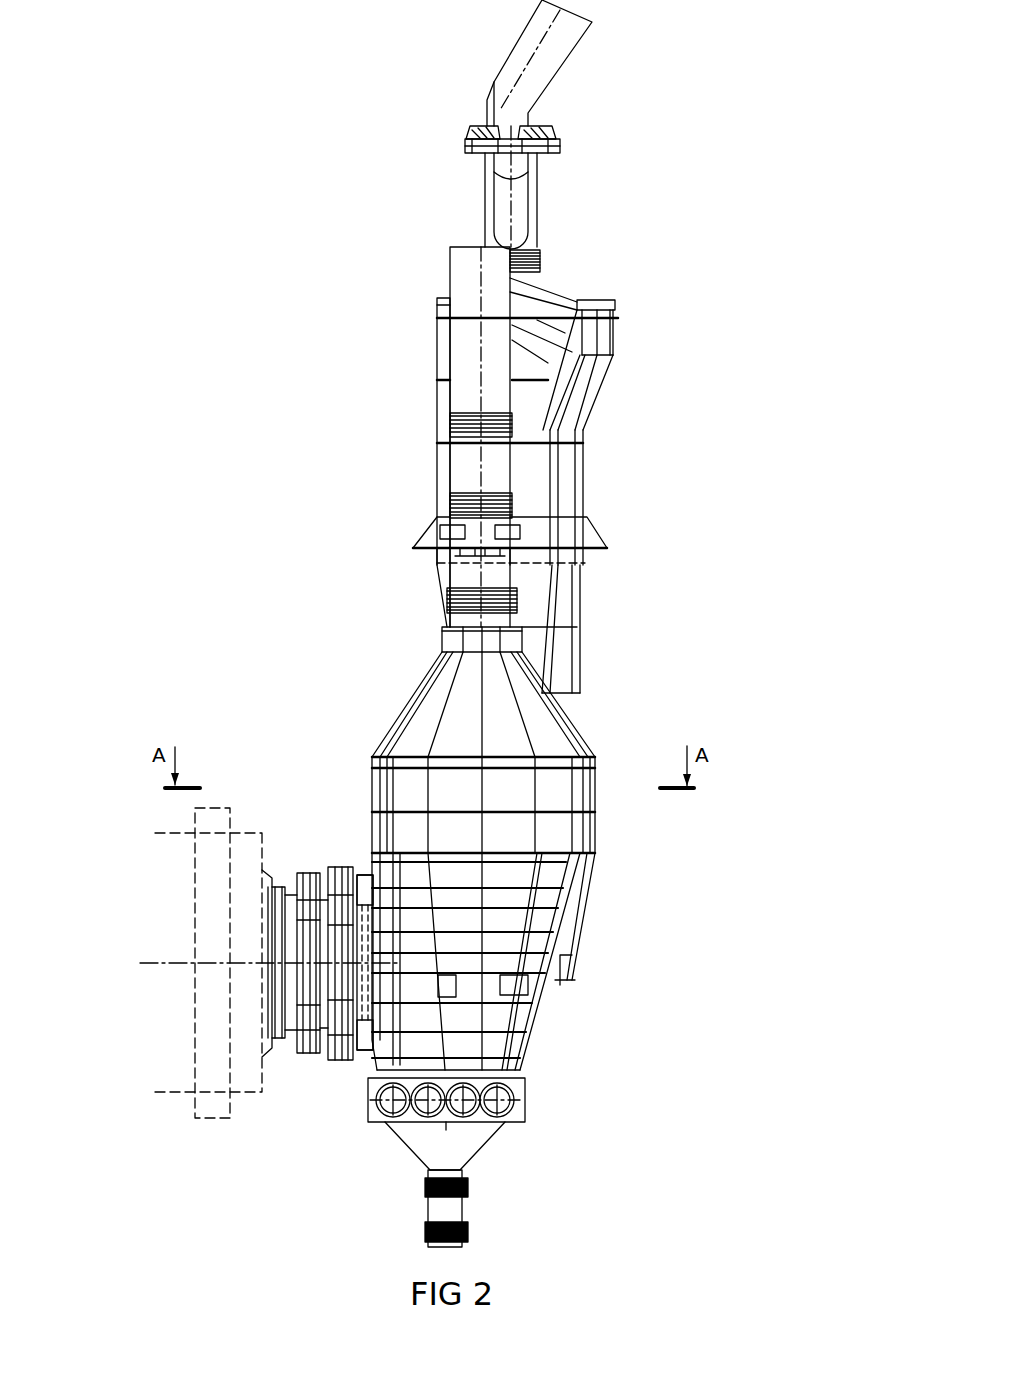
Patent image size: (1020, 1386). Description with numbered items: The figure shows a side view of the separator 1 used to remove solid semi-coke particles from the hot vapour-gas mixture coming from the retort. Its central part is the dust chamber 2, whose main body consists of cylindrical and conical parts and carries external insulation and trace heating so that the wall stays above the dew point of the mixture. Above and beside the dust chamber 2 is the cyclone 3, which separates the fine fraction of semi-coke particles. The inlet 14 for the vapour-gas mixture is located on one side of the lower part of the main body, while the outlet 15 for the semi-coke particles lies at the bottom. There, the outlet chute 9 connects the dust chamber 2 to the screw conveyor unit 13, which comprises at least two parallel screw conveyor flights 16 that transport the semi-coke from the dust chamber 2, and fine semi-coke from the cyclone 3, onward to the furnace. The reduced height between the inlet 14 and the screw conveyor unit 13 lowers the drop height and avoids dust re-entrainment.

The separator 1 is at (323, 625).
The dust chamber 2 is at (606, 714).
The cyclone 3 is at (610, 431).
The outlet chute 9 is at (505, 1083).
The screw conveyor unit 13 is at (347, 1130).
The inlet 14 is at (367, 905).
The outlet 15 is at (497, 1050).
The screw conveyor flights 16 is at (510, 1123).